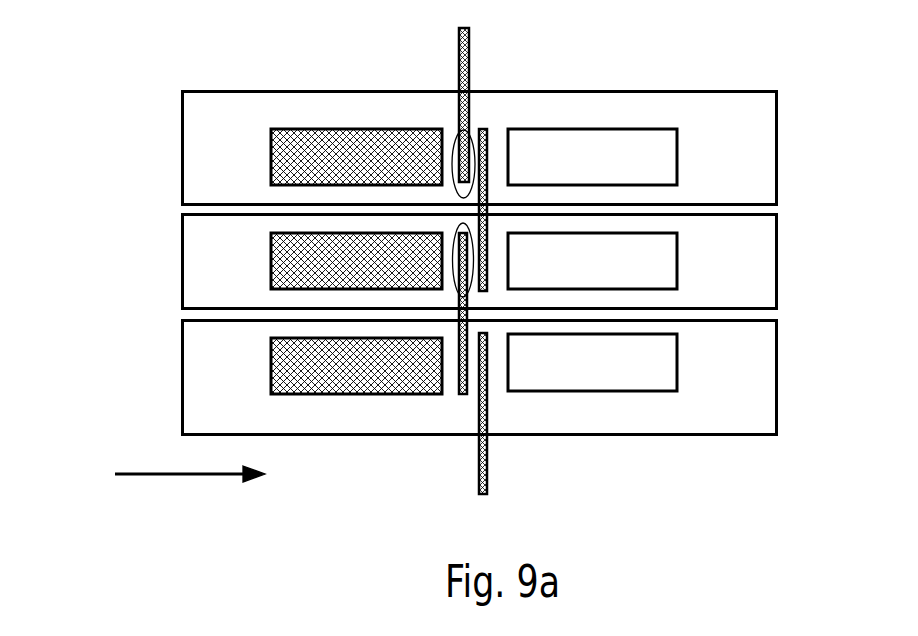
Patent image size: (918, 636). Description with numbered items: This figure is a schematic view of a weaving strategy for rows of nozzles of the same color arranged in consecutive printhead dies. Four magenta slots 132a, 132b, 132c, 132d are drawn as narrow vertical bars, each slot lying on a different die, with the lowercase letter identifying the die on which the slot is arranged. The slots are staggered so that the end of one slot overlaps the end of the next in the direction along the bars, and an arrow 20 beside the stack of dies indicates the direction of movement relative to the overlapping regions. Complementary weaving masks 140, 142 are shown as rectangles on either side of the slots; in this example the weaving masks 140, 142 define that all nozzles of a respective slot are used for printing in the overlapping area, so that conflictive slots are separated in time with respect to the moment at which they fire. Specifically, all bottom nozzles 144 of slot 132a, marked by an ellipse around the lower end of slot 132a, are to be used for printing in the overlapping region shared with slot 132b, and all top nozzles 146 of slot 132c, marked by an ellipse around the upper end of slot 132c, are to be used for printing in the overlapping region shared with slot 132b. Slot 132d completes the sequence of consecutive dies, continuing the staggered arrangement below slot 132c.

The direction of movement arrow 20 is at (188, 478).
The slot 132a is at (472, 43).
The slot 132b is at (490, 137).
The slot 132c is at (461, 393).
The slot 132d is at (489, 478).
The weaving mask 140 is at (312, 128).
The weaving mask 142 is at (637, 128).
The bottom nozzles 144 is at (456, 132).
The top nozzles 146 is at (454, 235).